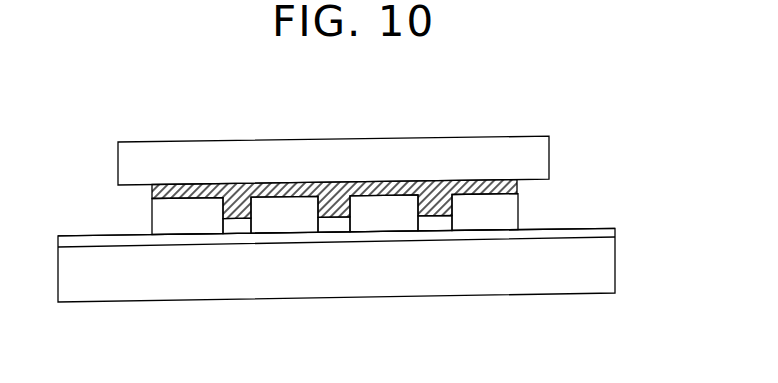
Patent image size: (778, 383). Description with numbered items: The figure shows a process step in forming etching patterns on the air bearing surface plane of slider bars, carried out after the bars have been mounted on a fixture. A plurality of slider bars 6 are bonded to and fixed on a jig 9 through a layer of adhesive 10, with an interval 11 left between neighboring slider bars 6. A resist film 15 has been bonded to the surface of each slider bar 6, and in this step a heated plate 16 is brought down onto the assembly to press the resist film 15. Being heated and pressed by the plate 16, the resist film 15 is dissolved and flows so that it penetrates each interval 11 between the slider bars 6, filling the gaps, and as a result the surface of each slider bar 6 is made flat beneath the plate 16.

The slider bar 6 is at (189, 212).
The jig 9 is at (605, 275).
The adhesive 10 is at (606, 236).
The interval 11 is at (238, 228).
The resist film 15 is at (519, 186).
The heated plate 16 is at (539, 156).